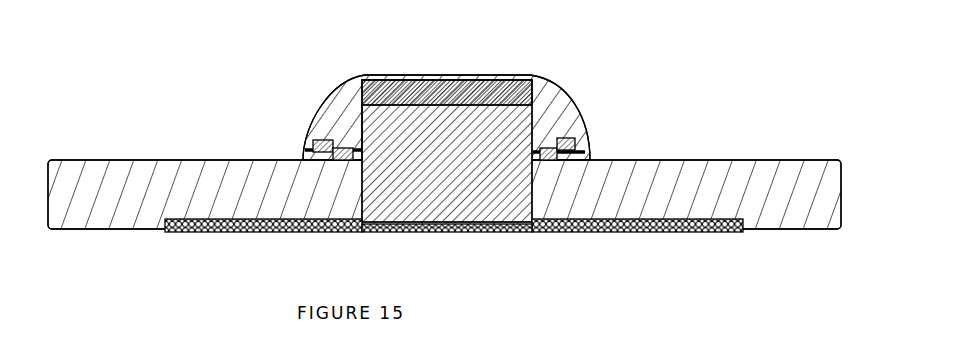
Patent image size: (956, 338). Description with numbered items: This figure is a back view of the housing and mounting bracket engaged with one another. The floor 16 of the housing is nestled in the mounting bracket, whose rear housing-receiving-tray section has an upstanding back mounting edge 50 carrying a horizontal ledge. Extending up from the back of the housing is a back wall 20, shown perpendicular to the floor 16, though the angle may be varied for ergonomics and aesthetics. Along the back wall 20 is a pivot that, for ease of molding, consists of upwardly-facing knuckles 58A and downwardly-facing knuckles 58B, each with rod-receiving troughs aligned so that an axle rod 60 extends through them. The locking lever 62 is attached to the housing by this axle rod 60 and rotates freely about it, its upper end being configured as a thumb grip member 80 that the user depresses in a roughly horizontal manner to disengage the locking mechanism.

The floor 16 is at (785, 231).
The back wall 20 is at (560, 108).
The upstanding back mounting edge 50 is at (634, 232).
The upwardly-facing knuckles 58A is at (307, 161).
The downwardly-facing knuckles 58B is at (313, 142).
The axle rod 60 is at (582, 148).
The locking lever 62 is at (380, 130).
The thumb grip member 80 is at (490, 80).